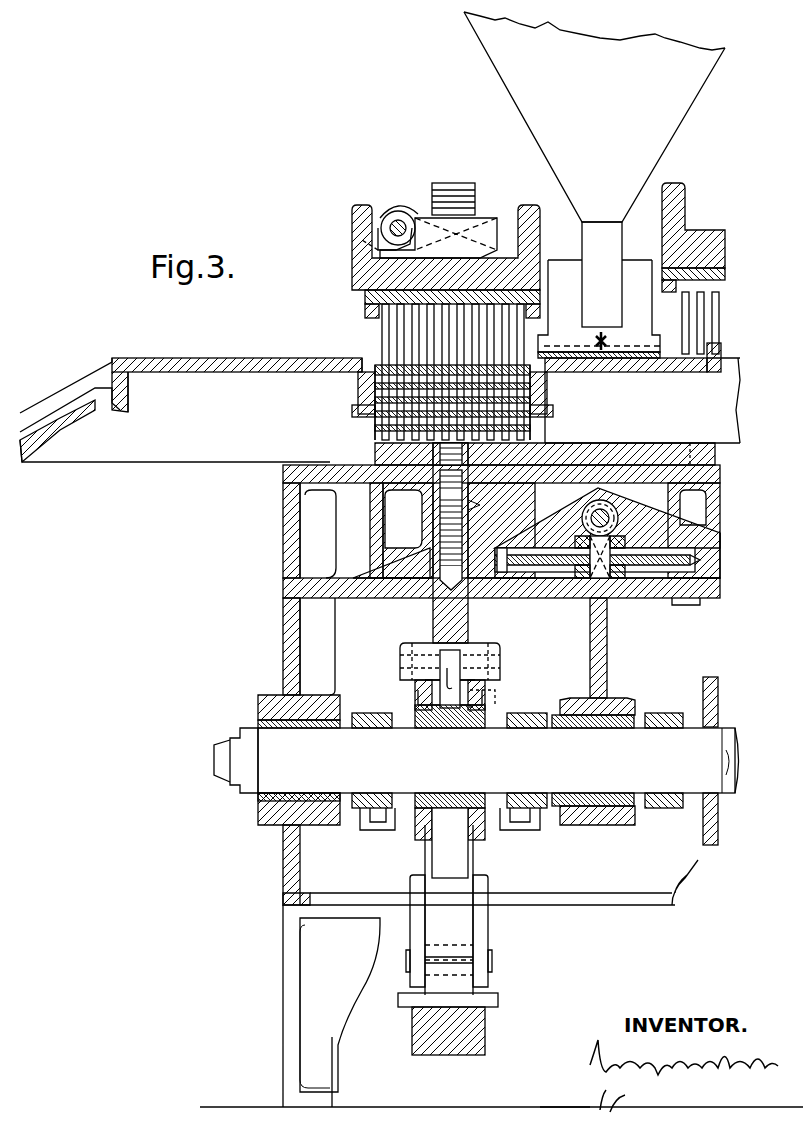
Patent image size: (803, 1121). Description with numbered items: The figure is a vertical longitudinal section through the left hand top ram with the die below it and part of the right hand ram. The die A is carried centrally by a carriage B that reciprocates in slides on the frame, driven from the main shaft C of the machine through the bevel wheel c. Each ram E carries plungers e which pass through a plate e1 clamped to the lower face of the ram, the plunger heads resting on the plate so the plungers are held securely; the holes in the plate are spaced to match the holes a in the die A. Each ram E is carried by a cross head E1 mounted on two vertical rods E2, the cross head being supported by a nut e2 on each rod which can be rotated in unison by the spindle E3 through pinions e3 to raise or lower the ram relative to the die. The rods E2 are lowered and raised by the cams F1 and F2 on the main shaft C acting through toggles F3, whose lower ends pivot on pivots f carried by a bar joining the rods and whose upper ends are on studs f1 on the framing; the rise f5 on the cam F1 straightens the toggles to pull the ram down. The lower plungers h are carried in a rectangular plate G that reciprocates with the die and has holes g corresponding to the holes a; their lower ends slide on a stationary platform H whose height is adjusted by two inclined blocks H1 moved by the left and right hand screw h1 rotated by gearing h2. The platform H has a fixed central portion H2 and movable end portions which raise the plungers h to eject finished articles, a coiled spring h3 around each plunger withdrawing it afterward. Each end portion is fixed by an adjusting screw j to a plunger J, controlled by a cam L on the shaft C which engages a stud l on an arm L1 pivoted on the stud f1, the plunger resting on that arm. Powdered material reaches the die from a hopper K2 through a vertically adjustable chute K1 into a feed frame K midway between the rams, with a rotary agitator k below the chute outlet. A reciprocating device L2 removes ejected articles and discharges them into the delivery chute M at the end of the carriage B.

The delivery chute M is at (72, 388).
The carriage B is at (270, 362).
The reciprocating device L2 is at (720, 358).
The hopper K2 is at (540, 146).
The chute K1 is at (602, 274).
The feed frame K is at (545, 344).
The rotary agitator k is at (606, 342).
The cross head E1 is at (700, 214).
The spindle E3 is at (390, 212).
The pinion e3 is at (402, 212).
The vertical rod E2 is at (456, 183).
The nut e2 is at (482, 222).
The ram E is at (364, 296).
The plate e1 is at (672, 290).
The plunger e is at (382, 334).
The die A is at (376, 368).
The hole a is at (358, 385).
The lower plunger h is at (358, 402).
The coiled spring h3 is at (560, 430).
The rectangular plate G is at (375, 448).
The vertical hole g is at (528, 480).
The central portion H2 is at (625, 465).
The platform H is at (588, 426).
The plunger J is at (433, 632).
The adjusting screw j is at (478, 506).
The inclined block H1 is at (408, 562).
The left and right hand screw h1 is at (556, 548).
The gearing h2 is at (608, 500).
The arm L1 is at (400, 668).
The stud l is at (450, 679).
The stud f1 is at (492, 668).
The main shaft C is at (498, 760).
The bevel wheel c is at (232, 745).
The cam F1 is at (378, 706).
The support F is at (645, 844).
The cam F2 is at (702, 664).
The rise f5 is at (540, 848).
The cam L is at (450, 843).
The toggle F3 is at (448, 916).
The pivot f is at (488, 964).